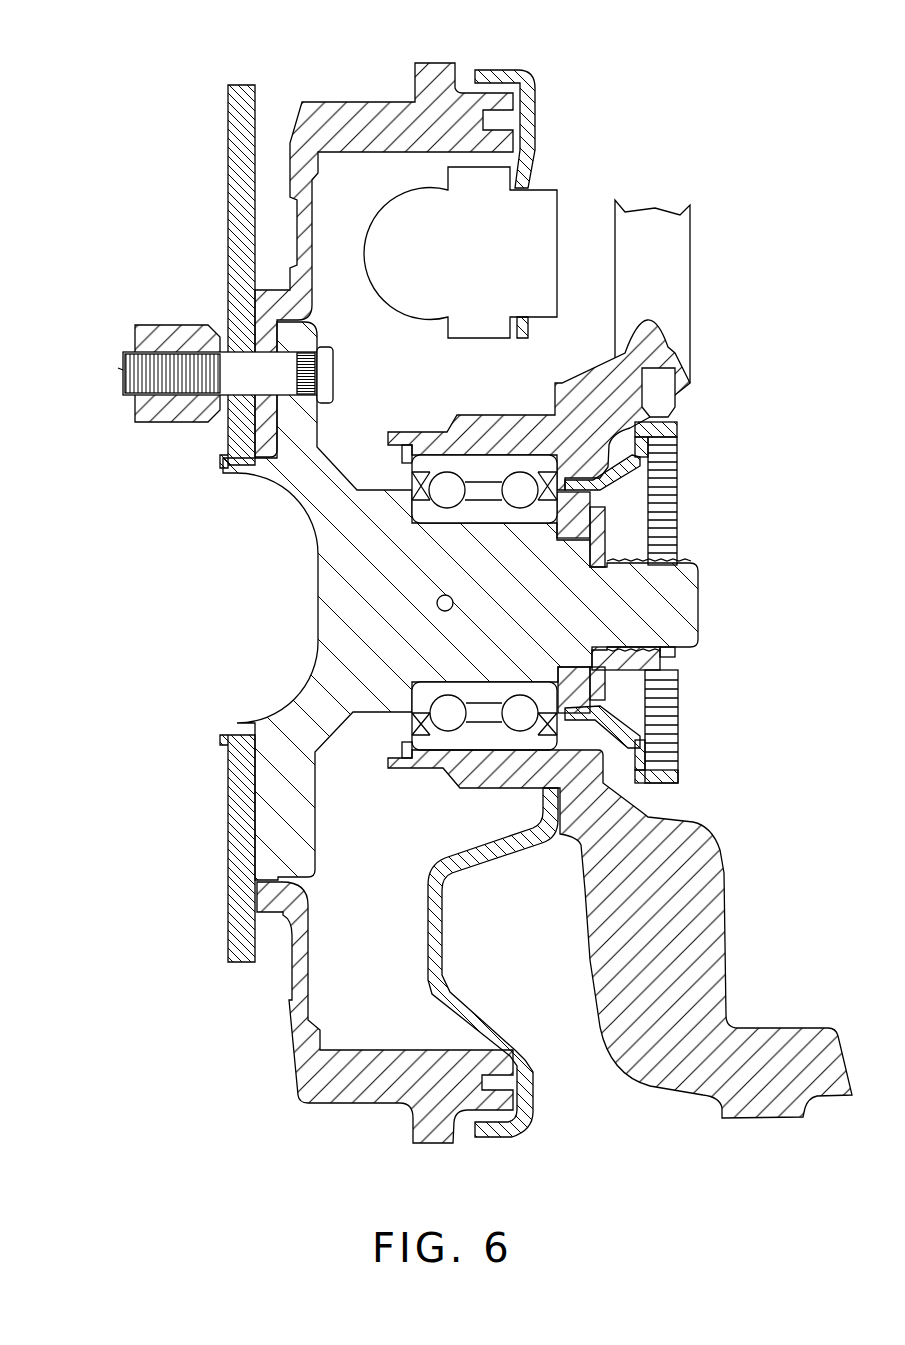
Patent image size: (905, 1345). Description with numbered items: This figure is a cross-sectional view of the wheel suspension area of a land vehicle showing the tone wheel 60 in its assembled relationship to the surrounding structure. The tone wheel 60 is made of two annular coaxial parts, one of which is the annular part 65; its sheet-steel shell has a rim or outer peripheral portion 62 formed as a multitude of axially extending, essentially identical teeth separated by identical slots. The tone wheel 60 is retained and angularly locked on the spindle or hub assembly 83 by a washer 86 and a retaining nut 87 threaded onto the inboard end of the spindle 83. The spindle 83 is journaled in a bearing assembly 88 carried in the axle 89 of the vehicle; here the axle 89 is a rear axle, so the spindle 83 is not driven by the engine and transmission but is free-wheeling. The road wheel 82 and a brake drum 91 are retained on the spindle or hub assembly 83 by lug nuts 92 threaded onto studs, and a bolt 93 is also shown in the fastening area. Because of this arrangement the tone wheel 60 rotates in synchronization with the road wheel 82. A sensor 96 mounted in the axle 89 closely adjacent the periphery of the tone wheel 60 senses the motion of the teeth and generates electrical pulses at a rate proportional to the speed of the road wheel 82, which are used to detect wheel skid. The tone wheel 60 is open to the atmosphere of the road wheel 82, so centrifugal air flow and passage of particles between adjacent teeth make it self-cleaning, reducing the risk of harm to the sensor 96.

The tone wheel 60 is at (690, 755).
The outer peripheral portion 62 is at (677, 416).
The annular coaxial part 65 is at (600, 712).
The road wheel 82 is at (228, 201).
The spindle or hub assembly 83 is at (332, 597).
The washer 86 is at (607, 520).
The retaining nut 87 is at (637, 651).
The bearing assembly 88 is at (478, 740).
The axle 89 is at (703, 921).
The brake drum 91 is at (348, 103).
The lug nuts 92 is at (167, 325).
The bolt 93 is at (123, 372).
The sensor 96 is at (665, 397).